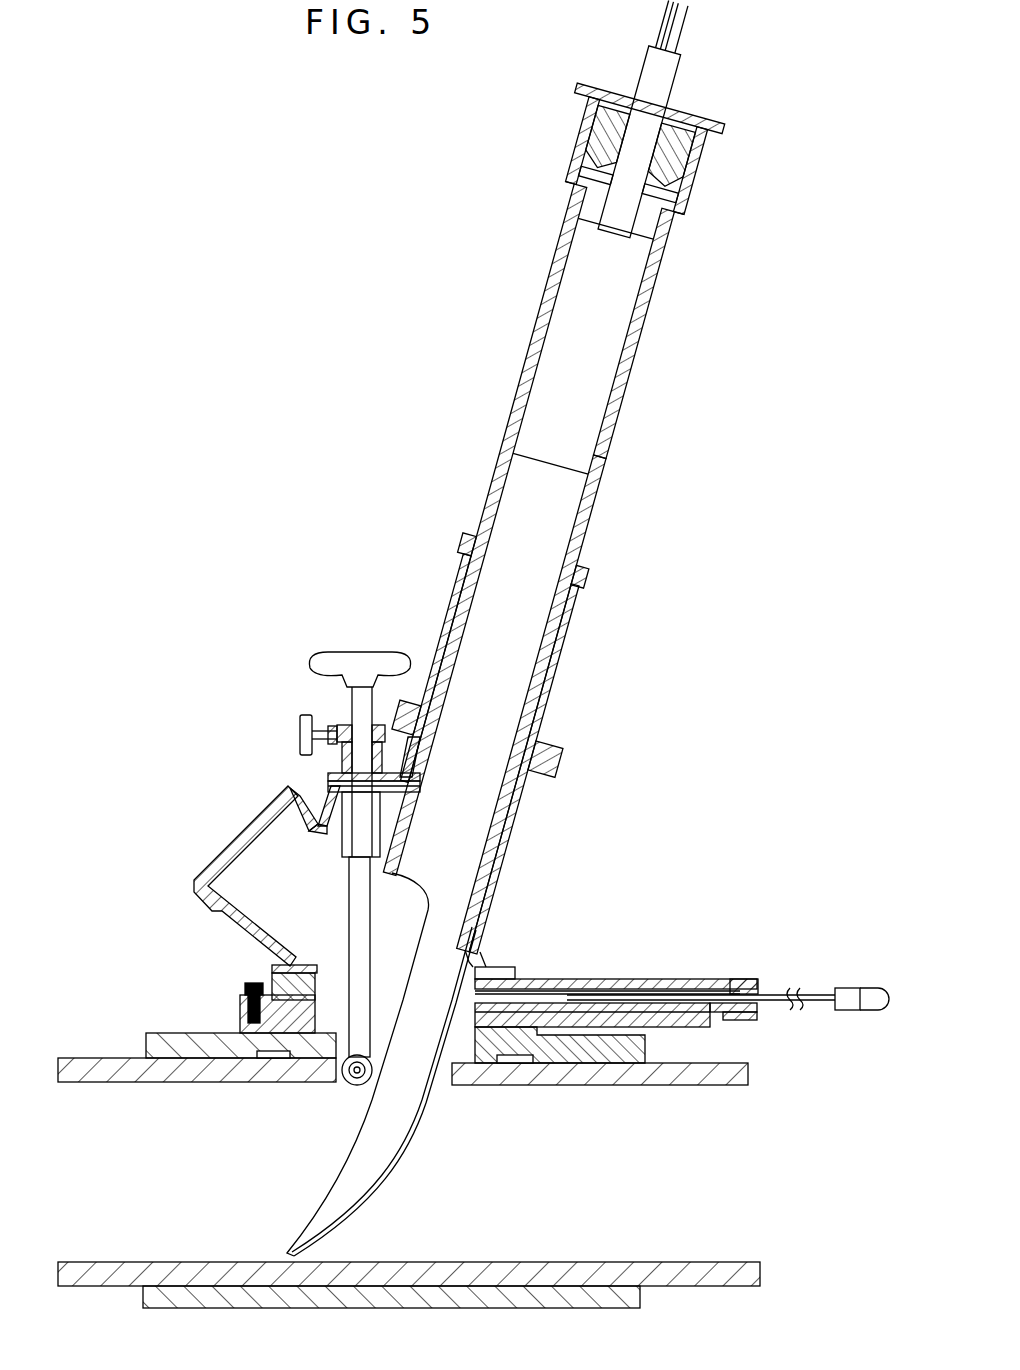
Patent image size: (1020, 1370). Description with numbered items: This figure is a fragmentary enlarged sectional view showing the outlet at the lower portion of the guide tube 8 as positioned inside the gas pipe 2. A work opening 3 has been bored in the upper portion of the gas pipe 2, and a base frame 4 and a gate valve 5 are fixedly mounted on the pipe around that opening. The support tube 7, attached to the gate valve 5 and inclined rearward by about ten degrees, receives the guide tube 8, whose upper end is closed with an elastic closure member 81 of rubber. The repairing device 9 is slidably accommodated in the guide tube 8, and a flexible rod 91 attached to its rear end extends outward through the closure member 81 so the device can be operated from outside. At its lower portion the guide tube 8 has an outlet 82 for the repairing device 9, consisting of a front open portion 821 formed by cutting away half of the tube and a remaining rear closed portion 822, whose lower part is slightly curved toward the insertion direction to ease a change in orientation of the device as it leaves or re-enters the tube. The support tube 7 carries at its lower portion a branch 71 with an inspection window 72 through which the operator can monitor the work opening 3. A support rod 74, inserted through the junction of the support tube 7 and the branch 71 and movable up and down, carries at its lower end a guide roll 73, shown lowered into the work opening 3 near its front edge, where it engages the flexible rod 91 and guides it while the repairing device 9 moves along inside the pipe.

The gas pipe 2 is at (95, 1055).
The work opening 3 is at (443, 1078).
The base frame 4 is at (185, 1035).
The gate valve 5 is at (706, 990).
The support tube 7 is at (555, 655).
The guide tube 8 is at (600, 455).
The repairing device 9 is at (618, 335).
The branch 71 is at (305, 790).
The inspection window 72 is at (240, 842).
The guide roll 73 is at (353, 1045).
The support rod 74 is at (350, 882).
The elastic closure member 81 is at (585, 123).
The outlet 82 is at (437, 972).
The flexible rod 91 is at (663, 73).
The front open portion 821 is at (370, 1092).
The rear closed portion 822 is at (383, 1157).